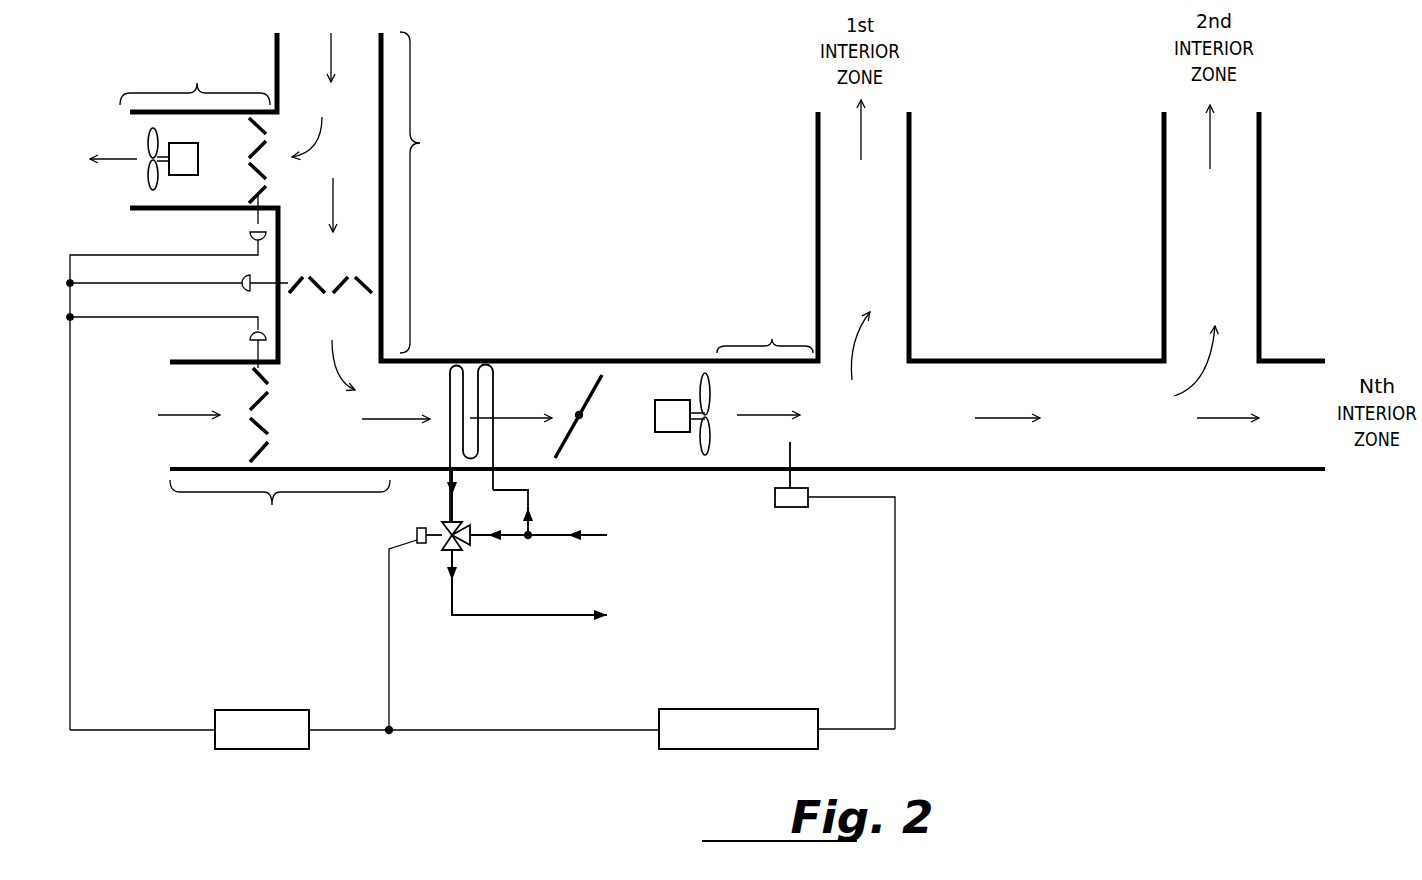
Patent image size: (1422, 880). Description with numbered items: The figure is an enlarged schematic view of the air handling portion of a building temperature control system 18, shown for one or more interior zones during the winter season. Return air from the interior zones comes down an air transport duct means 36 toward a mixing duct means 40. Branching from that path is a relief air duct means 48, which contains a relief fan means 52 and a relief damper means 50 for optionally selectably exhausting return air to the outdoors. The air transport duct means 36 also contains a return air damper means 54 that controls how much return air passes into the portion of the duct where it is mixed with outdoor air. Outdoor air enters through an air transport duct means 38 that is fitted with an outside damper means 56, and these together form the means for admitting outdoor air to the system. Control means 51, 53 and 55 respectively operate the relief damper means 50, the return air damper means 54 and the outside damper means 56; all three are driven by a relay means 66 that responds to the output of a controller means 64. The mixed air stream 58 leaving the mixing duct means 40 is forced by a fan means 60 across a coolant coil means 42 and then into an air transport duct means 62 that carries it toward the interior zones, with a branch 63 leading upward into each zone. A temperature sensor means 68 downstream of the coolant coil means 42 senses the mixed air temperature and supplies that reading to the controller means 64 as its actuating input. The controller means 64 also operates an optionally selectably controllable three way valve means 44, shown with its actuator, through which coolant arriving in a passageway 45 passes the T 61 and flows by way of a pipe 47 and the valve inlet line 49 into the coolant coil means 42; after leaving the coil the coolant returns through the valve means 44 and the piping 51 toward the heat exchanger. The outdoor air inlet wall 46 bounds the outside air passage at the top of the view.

The air conditioning system 18 is at (590, 746).
The air transport duct means 36 is at (420, 143).
The air transport duct means 38 is at (195, 468).
The mixing duct means 40 is at (280, 512).
The coolant coil means 42 is at (463, 372).
The valve means 44 is at (418, 545).
The passageway 45 is at (598, 533).
The outdoor air inlet duct 46 is at (276, 52).
The pipe 47 is at (528, 490).
The relief air duct means 48 is at (195, 77).
The valve inlet line 49 is at (510, 538).
The relief damper means 50 is at (255, 169).
The control means / piping 51 is at (250, 232).
The relief fan means 52 is at (148, 178).
The control means 53 is at (243, 287).
The return air damper means 54 is at (352, 296).
The control means 55 is at (250, 338).
The outside damper means 56 is at (270, 425).
The mixed air stream 58 is at (345, 445).
The fan means 60 is at (677, 425).
The T 61 is at (530, 538).
The air transport duct means 62 is at (765, 333).
The zone branch duct 63 is at (880, 408).
The controller means 64 is at (742, 722).
The relay means 66 is at (275, 730).
The temperature sensor means 68 is at (790, 510).